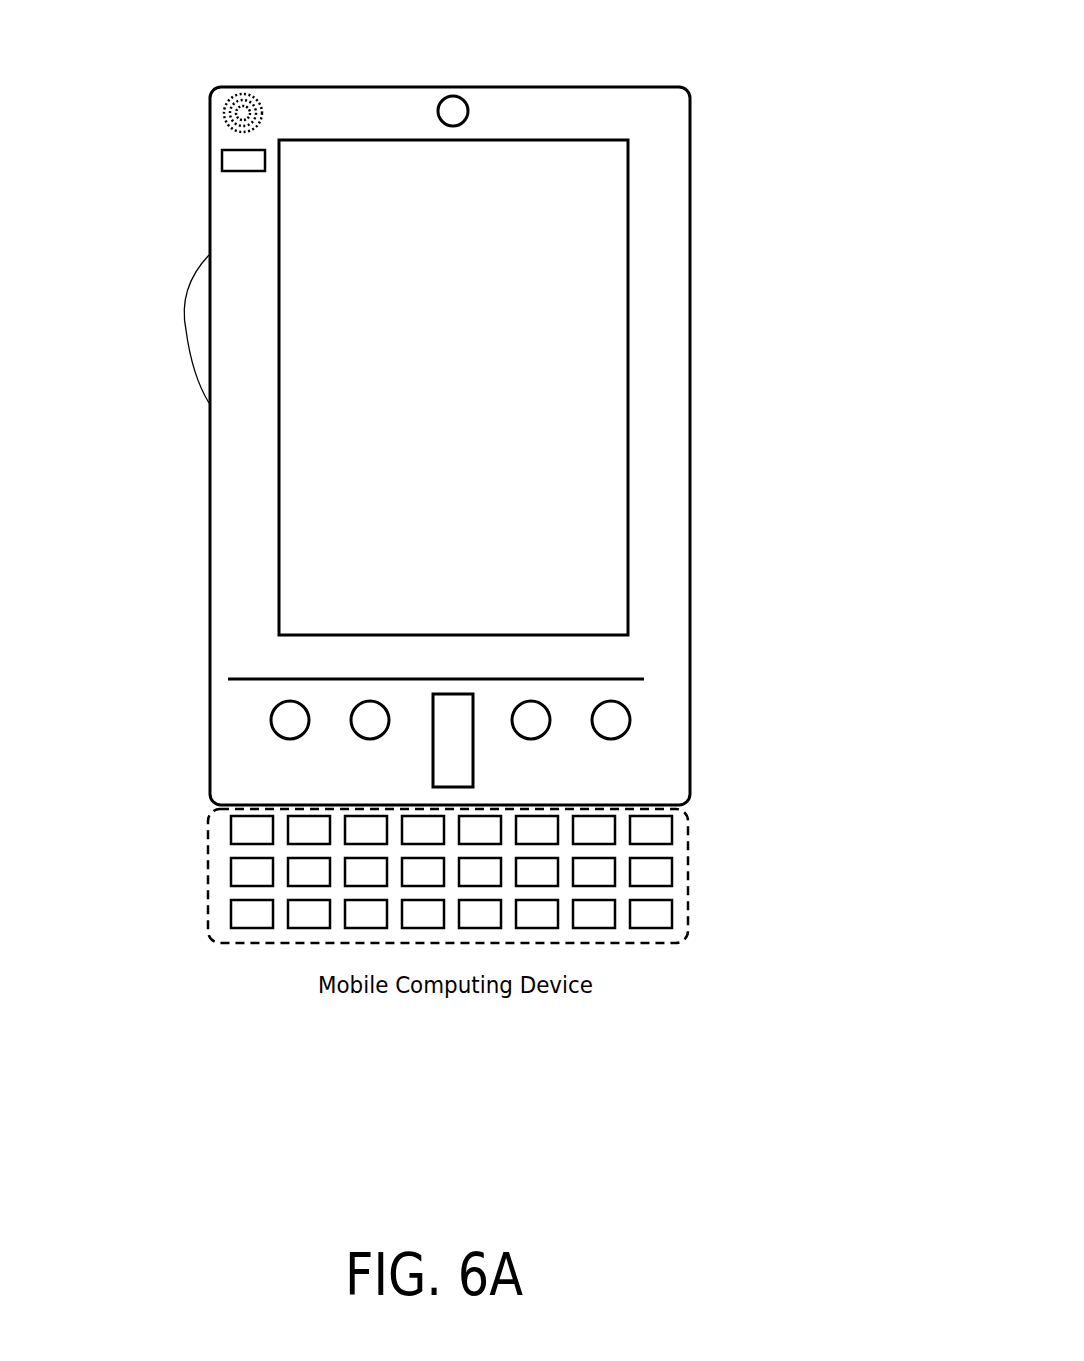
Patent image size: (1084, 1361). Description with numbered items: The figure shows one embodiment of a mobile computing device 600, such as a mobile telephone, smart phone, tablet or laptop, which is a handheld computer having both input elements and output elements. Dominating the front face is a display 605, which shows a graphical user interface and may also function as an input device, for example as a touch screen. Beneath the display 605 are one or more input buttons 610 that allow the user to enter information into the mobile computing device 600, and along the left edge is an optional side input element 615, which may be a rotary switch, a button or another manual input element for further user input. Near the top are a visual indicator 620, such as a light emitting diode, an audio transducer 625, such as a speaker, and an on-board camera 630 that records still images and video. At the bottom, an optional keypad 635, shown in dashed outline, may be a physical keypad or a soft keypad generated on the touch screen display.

The mobile computing device 600 is at (677, 105).
The display 605 is at (290, 545).
The input buttons 610 is at (452, 745).
The side input element 615 is at (200, 328).
The visual indicator 620 is at (223, 165).
The audio transducer 625 is at (223, 115).
The on-board camera 630 is at (465, 108).
The keypad 635 is at (218, 920).